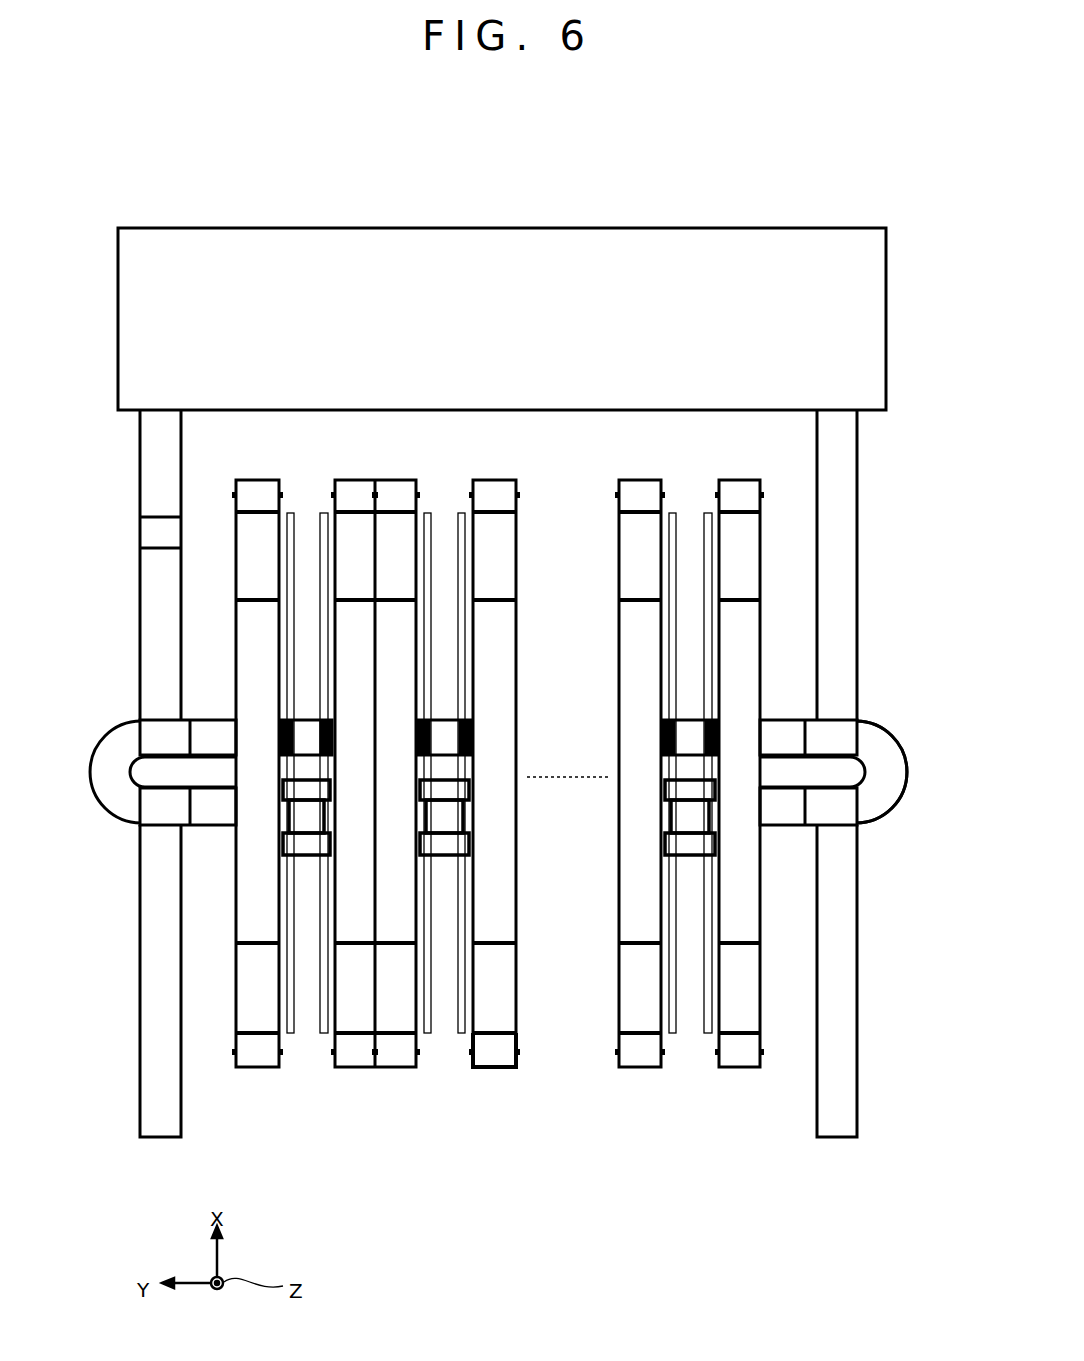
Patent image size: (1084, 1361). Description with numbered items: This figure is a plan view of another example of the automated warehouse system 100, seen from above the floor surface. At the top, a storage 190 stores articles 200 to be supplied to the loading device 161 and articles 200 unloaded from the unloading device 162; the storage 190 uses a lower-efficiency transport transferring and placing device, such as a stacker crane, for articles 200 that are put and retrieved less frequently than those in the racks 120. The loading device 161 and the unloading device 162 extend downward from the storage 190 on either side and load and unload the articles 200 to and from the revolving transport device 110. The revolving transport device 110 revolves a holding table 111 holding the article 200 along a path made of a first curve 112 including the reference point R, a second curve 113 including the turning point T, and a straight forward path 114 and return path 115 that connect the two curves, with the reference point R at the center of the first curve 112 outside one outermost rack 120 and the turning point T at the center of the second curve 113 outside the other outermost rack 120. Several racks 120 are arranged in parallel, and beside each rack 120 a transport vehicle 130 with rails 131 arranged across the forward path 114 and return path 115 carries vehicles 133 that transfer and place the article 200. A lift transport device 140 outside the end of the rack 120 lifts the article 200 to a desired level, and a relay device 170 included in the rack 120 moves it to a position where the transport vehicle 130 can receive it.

The automated warehouse system 100 is at (842, 142).
The revolving transport device 110 is at (862, 817).
The holding table 111 is at (167, 742).
The first curve 112 is at (110, 800).
The second curve 113 is at (883, 752).
The forward path 114 is at (781, 712).
The return path 115 is at (781, 833).
The rack 120 is at (635, 680).
The transport vehicle 130 is at (462, 510).
The rail 131 is at (466, 573).
The vehicle 133 is at (455, 792).
The lift transport device 140 is at (492, 1068).
The loading device 161 is at (183, 435).
The unloading device 162 is at (817, 437).
The relay device 170 is at (632, 542).
The storage 190 is at (503, 228).
The article 200 is at (455, 818).
The reference point R is at (105, 776).
The turning point T is at (901, 773).